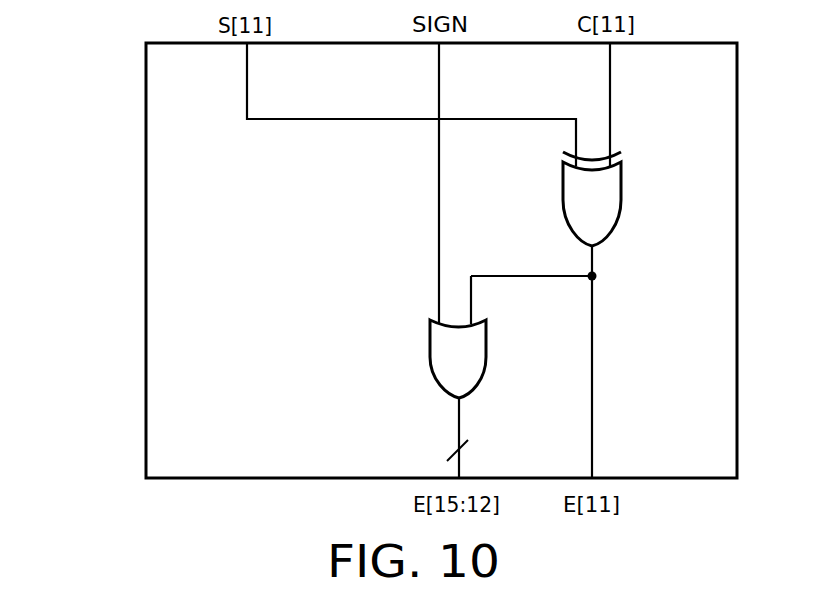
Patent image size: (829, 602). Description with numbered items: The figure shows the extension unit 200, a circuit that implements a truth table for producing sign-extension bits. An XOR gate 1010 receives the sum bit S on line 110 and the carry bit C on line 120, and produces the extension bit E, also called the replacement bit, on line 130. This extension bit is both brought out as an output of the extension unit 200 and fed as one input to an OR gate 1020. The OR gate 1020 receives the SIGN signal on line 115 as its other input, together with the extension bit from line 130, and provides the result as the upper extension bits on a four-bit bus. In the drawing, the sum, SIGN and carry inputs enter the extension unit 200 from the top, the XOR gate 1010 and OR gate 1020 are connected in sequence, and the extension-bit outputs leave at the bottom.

The summation circuit / adder stage 200 is at (146, 84).
The line 110 is at (247, 80).
The line 115 is at (439, 83).
The line 120 is at (610, 78).
The XOR gate 1010 is at (621, 180).
The OR gate 1020 is at (430, 341).
The line 130 is at (459, 421).